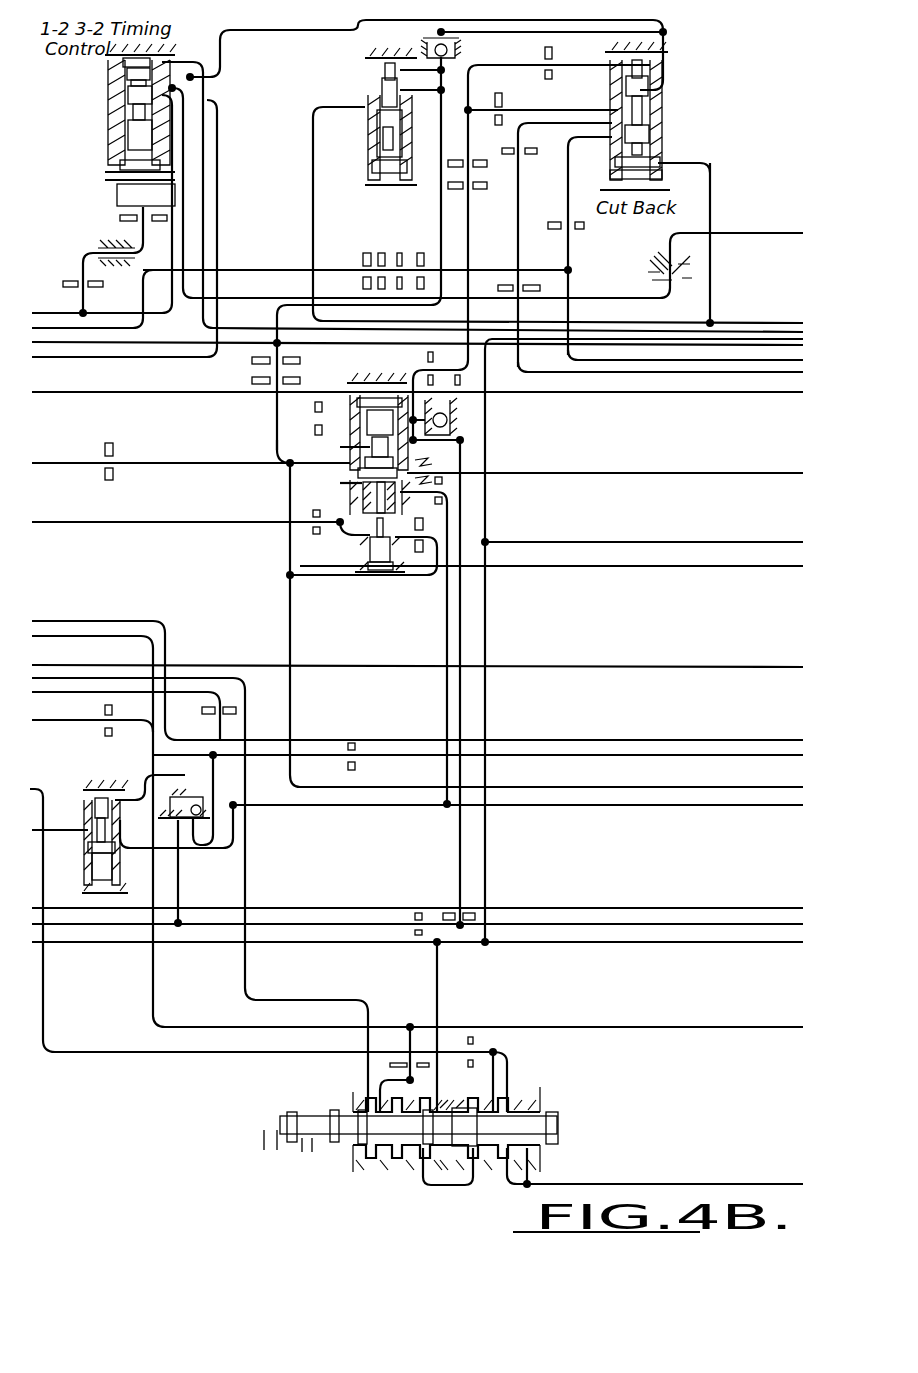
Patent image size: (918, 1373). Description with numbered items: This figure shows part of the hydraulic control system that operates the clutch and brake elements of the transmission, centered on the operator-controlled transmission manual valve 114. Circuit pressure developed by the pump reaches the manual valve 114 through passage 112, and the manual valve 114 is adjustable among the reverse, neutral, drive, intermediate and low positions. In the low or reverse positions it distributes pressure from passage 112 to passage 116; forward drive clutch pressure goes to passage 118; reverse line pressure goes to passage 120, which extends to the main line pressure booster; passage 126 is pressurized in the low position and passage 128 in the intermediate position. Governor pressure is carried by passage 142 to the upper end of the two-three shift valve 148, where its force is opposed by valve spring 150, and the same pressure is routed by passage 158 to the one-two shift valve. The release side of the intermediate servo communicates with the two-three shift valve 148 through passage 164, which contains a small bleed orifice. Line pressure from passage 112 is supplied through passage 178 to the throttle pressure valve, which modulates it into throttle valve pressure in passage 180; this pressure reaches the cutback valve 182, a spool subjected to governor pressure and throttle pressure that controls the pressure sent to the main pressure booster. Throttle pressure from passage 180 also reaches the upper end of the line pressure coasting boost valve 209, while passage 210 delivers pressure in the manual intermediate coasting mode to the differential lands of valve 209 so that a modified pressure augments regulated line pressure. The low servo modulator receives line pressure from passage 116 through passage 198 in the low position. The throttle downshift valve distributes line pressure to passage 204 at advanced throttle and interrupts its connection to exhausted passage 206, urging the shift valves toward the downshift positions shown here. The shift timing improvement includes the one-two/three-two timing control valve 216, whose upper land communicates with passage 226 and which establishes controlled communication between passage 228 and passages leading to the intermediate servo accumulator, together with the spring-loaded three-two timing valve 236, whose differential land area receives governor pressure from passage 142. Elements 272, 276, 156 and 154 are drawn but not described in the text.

The 1-2/3-2 timing control valve 216 is at (116, 121).
The passage 226 is at (43, 300).
The 3-2 timing valve 236 is at (372, 97).
The passage 164 is at (275, 424).
The passage 272 is at (60, 330).
The passage 276 is at (137, 342).
The passage 228 is at (92, 393).
The governor pressure passage 142 is at (143, 393).
The passage 158 is at (177, 508).
The 2-3 shift valve 148 is at (360, 456).
The valve spring 150 is at (360, 490).
The modulator valve plunger 156 is at (368, 557).
The passage 154 is at (710, 583).
The passage 198 is at (68, 621).
The passage 118 is at (128, 636).
The passage 210 is at (50, 692).
The cutback valve 182 is at (205, 795).
The line pressure coasting boost valve 209 is at (118, 835).
The throttle valve pressure passage 180 is at (328, 754).
The passage 204 is at (725, 769).
The exhausted passage 206 is at (692, 811).
The passage 178 is at (460, 857).
The passage 112 is at (336, 943).
The passage 128 is at (370, 1010).
The passage 126 is at (438, 988).
The passage 116 is at (135, 1053).
The passage 120 is at (715, 1184).
The transmission manual valve 114 is at (450, 1152).